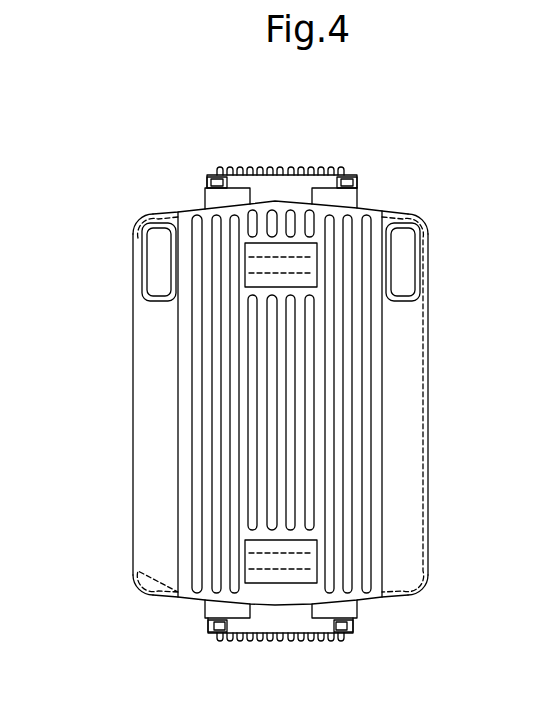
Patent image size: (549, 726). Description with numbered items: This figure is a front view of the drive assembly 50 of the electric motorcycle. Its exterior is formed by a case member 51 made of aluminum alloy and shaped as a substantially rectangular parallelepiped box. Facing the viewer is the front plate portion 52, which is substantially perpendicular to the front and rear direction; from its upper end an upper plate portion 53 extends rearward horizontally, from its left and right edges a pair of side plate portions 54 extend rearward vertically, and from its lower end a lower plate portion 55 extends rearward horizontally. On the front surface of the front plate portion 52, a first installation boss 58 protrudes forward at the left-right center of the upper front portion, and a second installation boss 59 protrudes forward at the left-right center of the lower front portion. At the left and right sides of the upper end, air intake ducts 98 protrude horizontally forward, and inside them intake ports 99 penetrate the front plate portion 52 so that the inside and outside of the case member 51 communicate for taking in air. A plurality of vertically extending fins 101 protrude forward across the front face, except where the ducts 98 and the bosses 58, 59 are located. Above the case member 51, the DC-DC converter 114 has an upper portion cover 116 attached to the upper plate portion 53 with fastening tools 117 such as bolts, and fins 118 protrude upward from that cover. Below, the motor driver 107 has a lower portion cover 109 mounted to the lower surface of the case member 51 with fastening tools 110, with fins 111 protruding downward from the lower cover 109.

The drive assembly 50 is at (454, 236).
The case member 51 is at (126, 343).
The front plate portion 52 is at (405, 507).
The upper plate portion 53 is at (190, 210).
The side plate portion 54 is at (133, 427).
The lower plate portion 55 is at (190, 598).
The first installation boss 58 is at (303, 268).
The second installation boss 59 is at (300, 562).
The air intake duct 98 is at (141, 258).
The intake port 99 is at (150, 267).
The fins 101 is at (267, 465).
The motor driver 107 is at (340, 662).
The lower portion cover 109 is at (333, 640).
The fastening tools 110 is at (213, 635).
The fins 111 is at (298, 641).
The DC-DC converter 114 is at (280, 142).
The upper portion cover 116 is at (237, 197).
The fastening tools 117 is at (217, 177).
The fins 118 is at (313, 168).